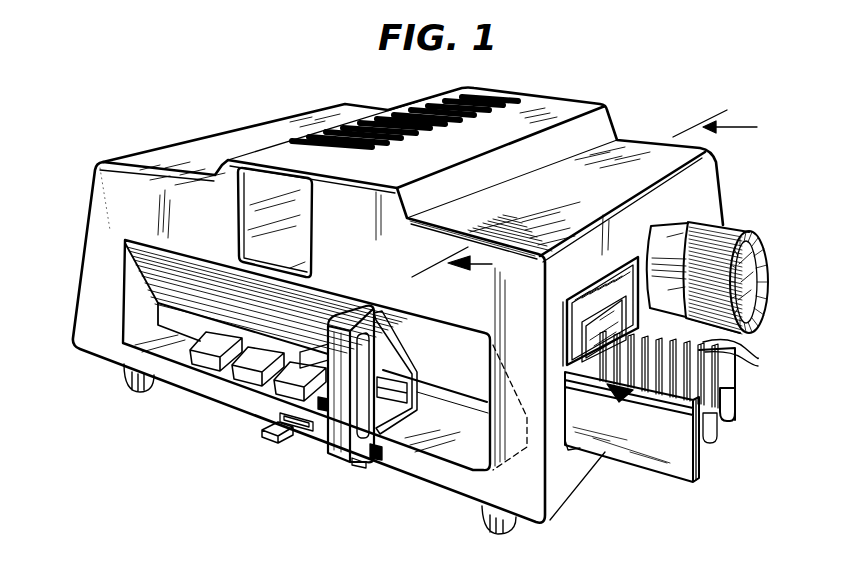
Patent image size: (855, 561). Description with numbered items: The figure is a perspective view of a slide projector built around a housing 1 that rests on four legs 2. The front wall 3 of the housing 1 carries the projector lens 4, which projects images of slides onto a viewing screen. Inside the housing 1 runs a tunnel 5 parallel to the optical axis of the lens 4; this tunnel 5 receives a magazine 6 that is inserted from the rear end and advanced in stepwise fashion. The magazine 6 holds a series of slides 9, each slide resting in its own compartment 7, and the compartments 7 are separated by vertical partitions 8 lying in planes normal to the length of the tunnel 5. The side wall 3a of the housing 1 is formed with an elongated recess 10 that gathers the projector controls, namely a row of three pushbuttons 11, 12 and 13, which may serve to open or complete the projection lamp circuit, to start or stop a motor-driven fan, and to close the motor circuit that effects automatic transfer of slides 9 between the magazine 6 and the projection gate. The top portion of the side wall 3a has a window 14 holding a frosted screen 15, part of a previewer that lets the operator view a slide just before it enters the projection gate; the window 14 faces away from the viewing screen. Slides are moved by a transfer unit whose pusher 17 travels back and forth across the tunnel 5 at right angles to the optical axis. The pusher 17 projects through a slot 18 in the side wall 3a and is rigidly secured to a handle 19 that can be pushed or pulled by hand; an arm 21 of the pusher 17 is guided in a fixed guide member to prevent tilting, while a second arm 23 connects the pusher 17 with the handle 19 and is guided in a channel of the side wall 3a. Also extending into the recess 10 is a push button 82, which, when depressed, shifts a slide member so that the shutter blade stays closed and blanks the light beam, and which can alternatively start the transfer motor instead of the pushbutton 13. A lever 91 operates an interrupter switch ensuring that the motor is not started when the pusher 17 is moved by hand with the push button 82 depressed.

The housing 1 is at (625, 146).
The legs 2 is at (507, 525).
The front wall 3 is at (717, 184).
The side wall 3a is at (125, 203).
The projector lens 4 is at (752, 308).
The tunnel 5 is at (610, 268).
The magazine 6 is at (670, 457).
The compartment 7 is at (616, 396).
The vertical partitions 8 is at (738, 355).
The slides 9 is at (590, 294).
The recess 10 is at (127, 305).
The pushbutton 11 is at (200, 366).
The pushbutton 12 is at (240, 381).
The pushbutton 13 is at (282, 394).
The window 14 is at (240, 222).
The frosted screen 15 is at (292, 238).
The pusher 17 is at (337, 470).
The slot 18 is at (410, 368).
The handle 19 is at (367, 460).
The arm 21 is at (392, 335).
The second arm 23 is at (382, 455).
The push button 82 is at (323, 417).
The lever 91 is at (271, 438).